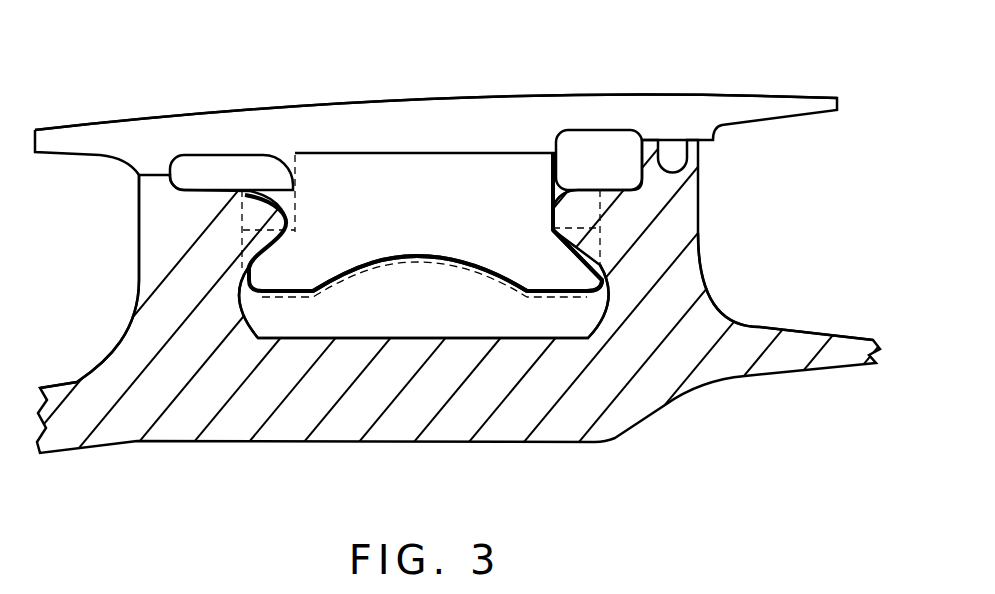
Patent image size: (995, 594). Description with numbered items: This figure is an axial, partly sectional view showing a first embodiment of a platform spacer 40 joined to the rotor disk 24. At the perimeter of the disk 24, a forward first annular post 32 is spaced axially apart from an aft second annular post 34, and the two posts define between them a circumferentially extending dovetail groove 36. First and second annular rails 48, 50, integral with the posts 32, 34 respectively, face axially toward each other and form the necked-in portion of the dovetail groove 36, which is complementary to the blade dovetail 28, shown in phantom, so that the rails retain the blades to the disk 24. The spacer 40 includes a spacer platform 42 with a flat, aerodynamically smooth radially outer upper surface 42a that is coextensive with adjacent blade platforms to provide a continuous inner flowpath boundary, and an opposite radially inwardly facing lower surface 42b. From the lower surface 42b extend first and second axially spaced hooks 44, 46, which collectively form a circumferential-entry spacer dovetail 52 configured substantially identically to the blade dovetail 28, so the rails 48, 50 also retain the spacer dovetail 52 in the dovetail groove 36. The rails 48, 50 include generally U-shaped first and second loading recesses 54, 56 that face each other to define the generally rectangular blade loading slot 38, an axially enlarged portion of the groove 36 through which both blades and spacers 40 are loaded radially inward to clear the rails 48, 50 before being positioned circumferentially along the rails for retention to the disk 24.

The rotor disk 24 is at (270, 442).
The dovetail 28 is at (500, 280).
The first annular post 32 is at (139, 286).
The second annular post 34 is at (700, 240).
The dovetail groove 36 is at (310, 330).
The blade loading slot 38 is at (257, 190).
The spacer 40 is at (410, 85).
The spacer platform 42 is at (840, 102).
The upper surface 42a is at (665, 92).
The lower surface 42b is at (430, 157).
The first hook 44 is at (263, 277).
The second hook 46 is at (573, 273).
The first annular rail 48 is at (295, 188).
The second annular rail 50 is at (555, 205).
The spacer dovetail 52 is at (396, 266).
The first loading recess 54 is at (262, 230).
The second loading recess 56 is at (555, 230).